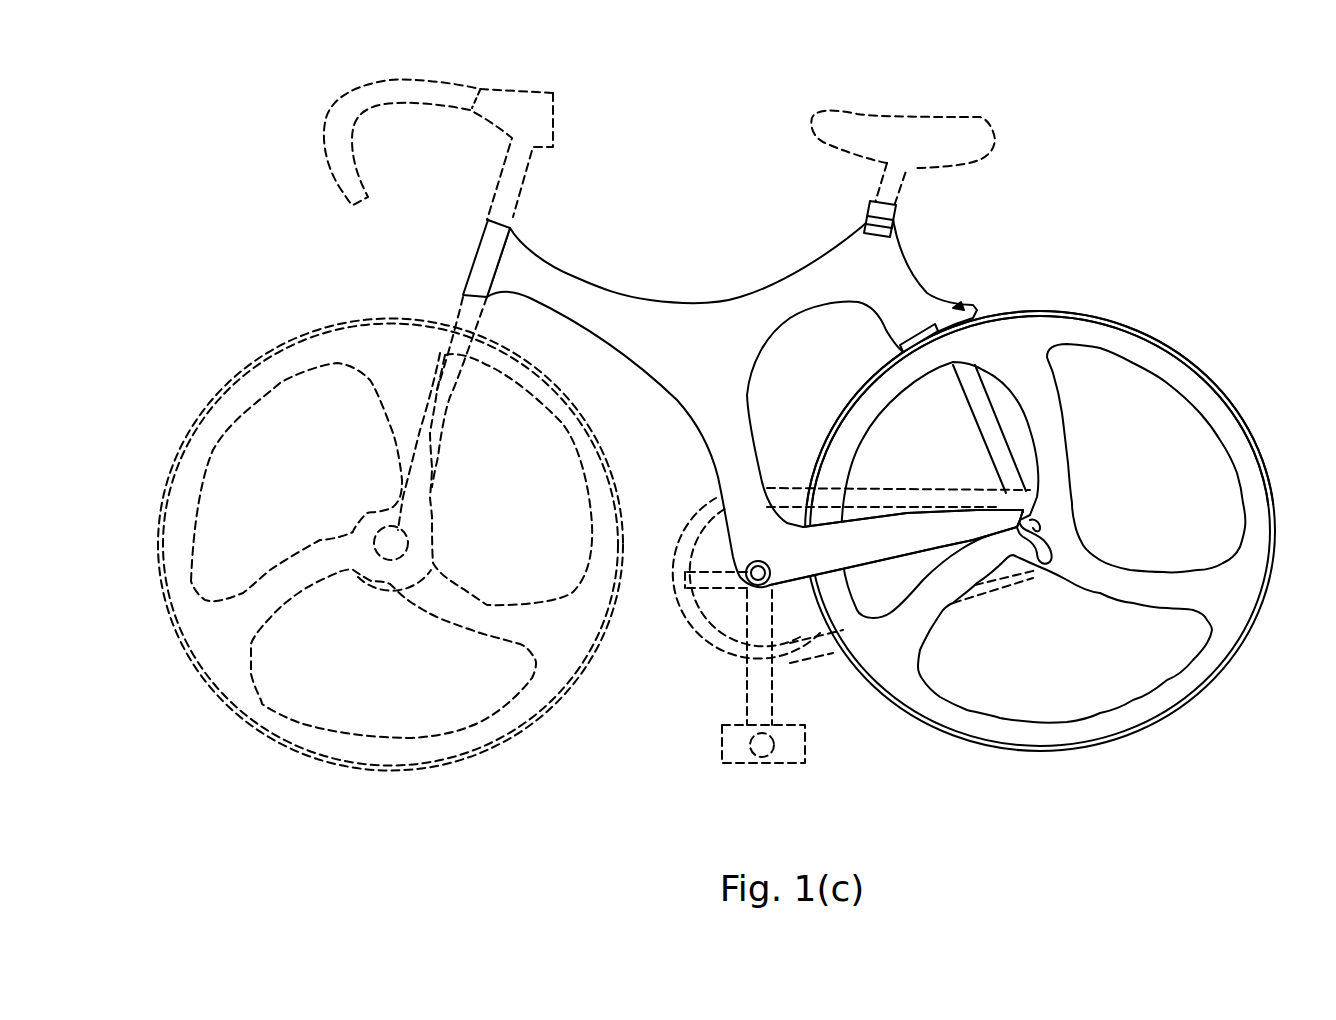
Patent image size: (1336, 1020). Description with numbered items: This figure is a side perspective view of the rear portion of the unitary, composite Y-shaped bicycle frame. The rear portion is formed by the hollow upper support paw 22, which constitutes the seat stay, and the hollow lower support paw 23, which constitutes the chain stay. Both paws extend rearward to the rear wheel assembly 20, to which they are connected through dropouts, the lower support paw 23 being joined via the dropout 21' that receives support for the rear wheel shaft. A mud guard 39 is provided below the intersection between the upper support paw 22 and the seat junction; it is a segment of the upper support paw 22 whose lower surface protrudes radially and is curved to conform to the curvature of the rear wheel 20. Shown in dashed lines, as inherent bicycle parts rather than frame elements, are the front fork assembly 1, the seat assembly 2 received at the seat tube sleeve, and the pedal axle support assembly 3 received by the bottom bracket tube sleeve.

The front fork assembly 1 is at (533, 92).
The seat assembly 2 is at (977, 113).
The pedal axle support assembly 3 is at (745, 576).
The rear wheel assembly 20 is at (1193, 383).
The dropout 21' is at (1099, 533).
The upper support paw 22 is at (970, 398).
The lower support paw 23 is at (893, 607).
The mud guard 39 is at (958, 305).